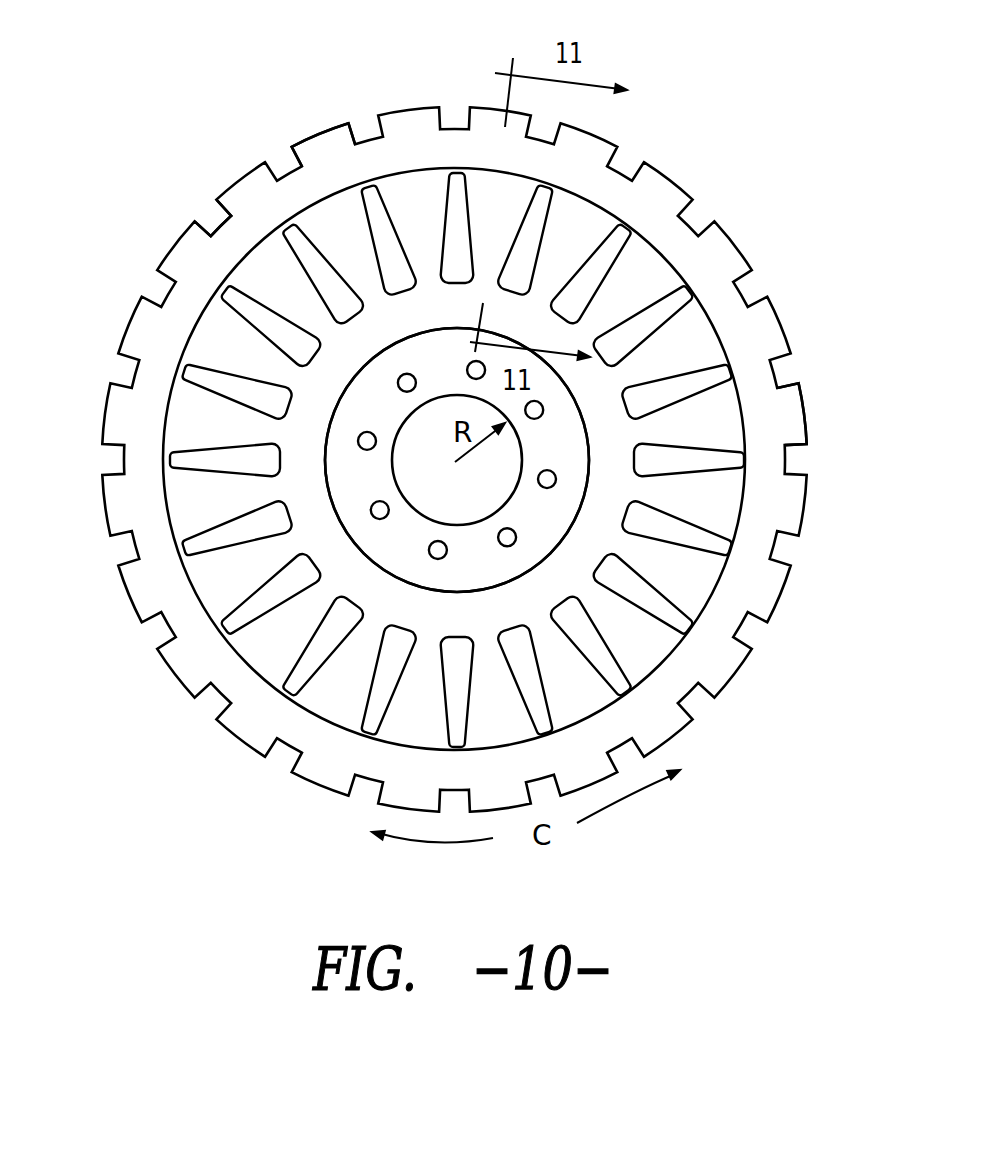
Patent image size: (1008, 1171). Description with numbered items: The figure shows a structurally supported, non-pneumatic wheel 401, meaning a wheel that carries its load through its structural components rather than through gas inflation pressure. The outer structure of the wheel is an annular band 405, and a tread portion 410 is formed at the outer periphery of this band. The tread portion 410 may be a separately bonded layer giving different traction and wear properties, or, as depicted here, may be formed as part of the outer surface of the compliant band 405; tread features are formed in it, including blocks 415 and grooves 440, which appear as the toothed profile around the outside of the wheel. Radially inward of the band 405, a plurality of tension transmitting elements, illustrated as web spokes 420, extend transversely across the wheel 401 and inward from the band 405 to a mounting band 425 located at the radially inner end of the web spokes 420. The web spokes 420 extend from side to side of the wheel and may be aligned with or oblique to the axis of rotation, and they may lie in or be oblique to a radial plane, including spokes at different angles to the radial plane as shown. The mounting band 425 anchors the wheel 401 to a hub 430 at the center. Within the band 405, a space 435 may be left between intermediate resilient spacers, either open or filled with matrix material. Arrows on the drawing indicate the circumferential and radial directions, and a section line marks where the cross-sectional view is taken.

The non-pneumatic wheel 401 is at (454, 419).
The annular band 405 is at (705, 287).
The tread portion 410 is at (785, 418).
The blocks 415 is at (317, 127).
The web spokes 420 is at (203, 400).
The mounting band 425 is at (340, 548).
The hub 430 is at (552, 503).
The space 435 is at (518, 532).
The grooves 440 is at (207, 213).